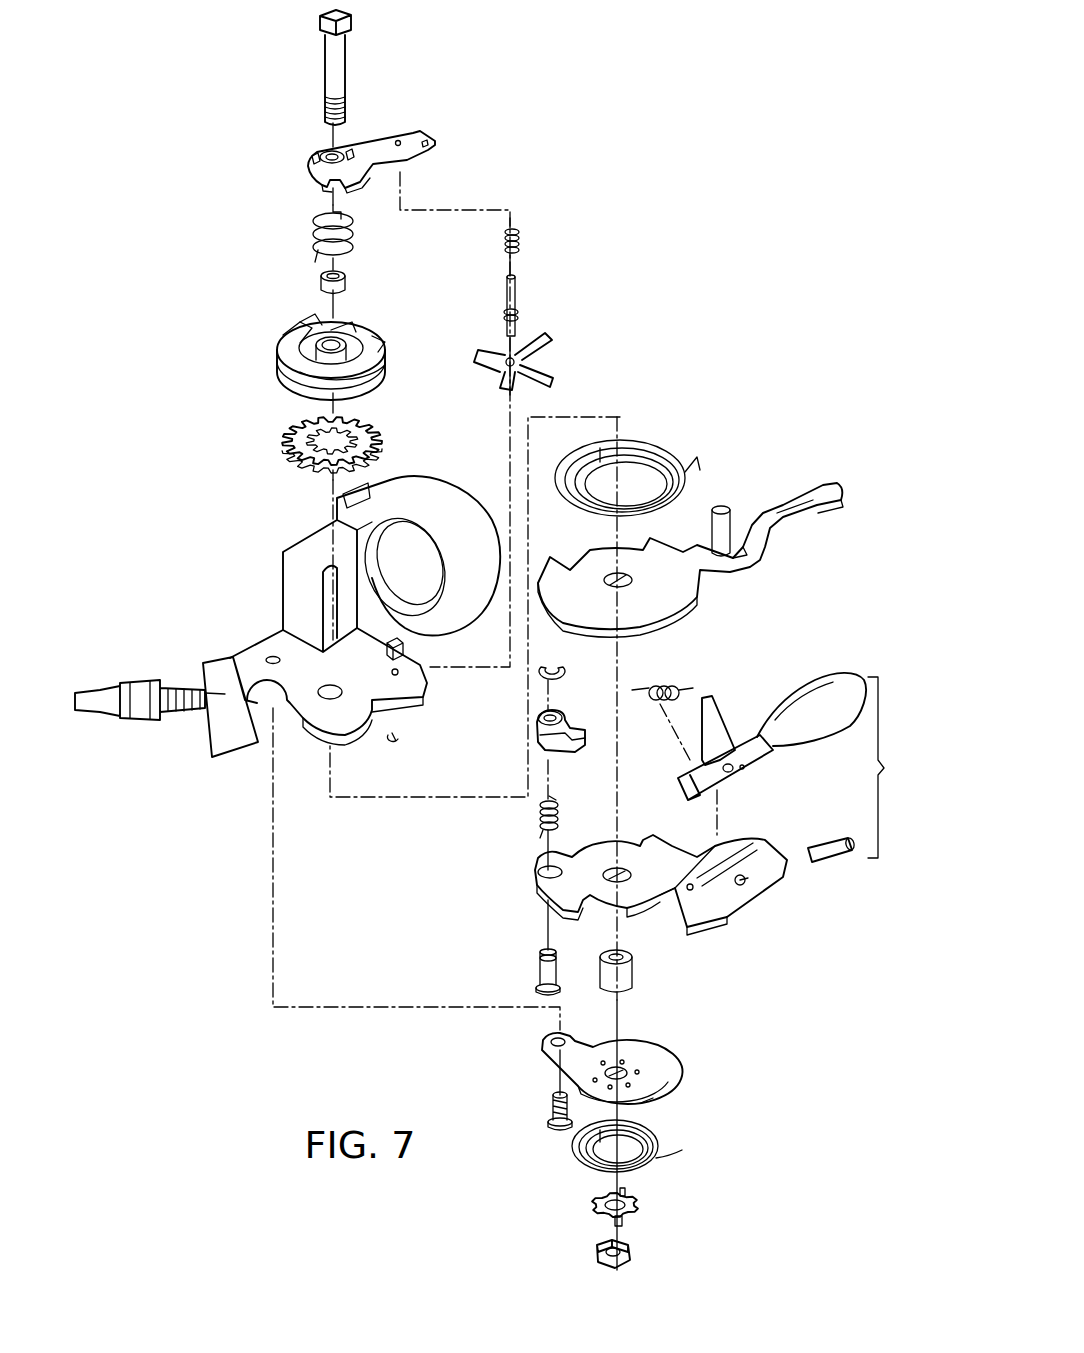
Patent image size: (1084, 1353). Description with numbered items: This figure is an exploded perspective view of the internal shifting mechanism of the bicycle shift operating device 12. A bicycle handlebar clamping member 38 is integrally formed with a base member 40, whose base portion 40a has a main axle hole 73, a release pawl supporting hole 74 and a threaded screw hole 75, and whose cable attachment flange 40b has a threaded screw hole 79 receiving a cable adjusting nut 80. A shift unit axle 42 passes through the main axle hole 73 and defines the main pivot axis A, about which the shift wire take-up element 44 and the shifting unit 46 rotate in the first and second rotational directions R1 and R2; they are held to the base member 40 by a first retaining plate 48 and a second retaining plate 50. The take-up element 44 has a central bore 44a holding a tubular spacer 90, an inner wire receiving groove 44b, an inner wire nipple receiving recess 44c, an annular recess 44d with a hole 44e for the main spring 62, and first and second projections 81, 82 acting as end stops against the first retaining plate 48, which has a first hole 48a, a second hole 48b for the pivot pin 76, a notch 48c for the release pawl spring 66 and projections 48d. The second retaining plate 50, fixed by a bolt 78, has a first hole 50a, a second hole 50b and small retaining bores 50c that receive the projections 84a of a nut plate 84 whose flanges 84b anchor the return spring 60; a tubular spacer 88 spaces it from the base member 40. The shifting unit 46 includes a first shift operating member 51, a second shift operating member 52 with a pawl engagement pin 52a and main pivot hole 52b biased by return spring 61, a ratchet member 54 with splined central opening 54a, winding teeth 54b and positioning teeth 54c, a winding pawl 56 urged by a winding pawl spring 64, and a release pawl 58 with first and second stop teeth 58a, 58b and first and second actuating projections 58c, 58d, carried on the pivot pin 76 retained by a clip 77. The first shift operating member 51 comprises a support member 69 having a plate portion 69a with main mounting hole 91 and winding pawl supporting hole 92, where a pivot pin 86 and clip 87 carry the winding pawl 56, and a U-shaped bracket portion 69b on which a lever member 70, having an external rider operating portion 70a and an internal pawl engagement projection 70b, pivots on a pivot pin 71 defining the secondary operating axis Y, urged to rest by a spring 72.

The bicycle shift operating device 12 is at (590, 72).
The bicycle handlebar clamping member 38 is at (338, 635).
The base member 40 is at (338, 635).
The base portion 40a is at (285, 637).
The cable attachment flange 40b is at (228, 745).
The shift unit axle 42 is at (325, 62).
The shift wire take-up element 44 is at (328, 350).
The central bore 44a is at (360, 338).
The inner wire receiving groove 44b is at (356, 376).
The inner wire nipple receiving recess 44c is at (385, 345).
The annular recess 44d is at (340, 325).
The hole 44e is at (292, 332).
The shifting unit 46 is at (660, 262).
The first retaining plate 48 is at (380, 148).
The first hole 48a is at (323, 155).
The second hole 48b is at (401, 146).
The notch 48c is at (437, 146).
The projections 48d is at (311, 170).
The second retaining plate 50 is at (599, 1060).
The first hole 50a is at (623, 1069).
The second hole 50b is at (551, 1040).
The small retaining bores 50c is at (640, 1074).
The first shift operating member 51 is at (889, 767).
The second shift operating member 52 is at (690, 525).
The pawl engagement pin 52a is at (708, 510).
The main pivot hole 52b is at (615, 576).
The ratchet member 54 is at (338, 443).
The splined central opening 54a is at (360, 446).
The winding teeth 54b is at (356, 462).
The positioning teeth 54c is at (362, 428).
The winding pawl 56 is at (567, 712).
The release pawl 58 is at (535, 377).
The first stop tooth 58a is at (490, 360).
The second stop tooth 58b is at (505, 386).
The first actuating projection 58c is at (555, 385).
The second actuating projection 58d is at (548, 335).
The return spring 60 is at (573, 1165).
The return spring 61 is at (640, 445).
The main spring 62 is at (305, 219).
The winding pawl spring 64 is at (560, 800).
The release pawl spring 66 is at (526, 230).
The support member 69 is at (639, 880).
The plate portion 69a is at (636, 890).
The bracket portion 69b is at (773, 895).
The lever member 70 is at (772, 699).
The external rider operating portion 70a is at (787, 695).
The internal pawl engagement projection 70b is at (716, 720).
The pivot pin 71 is at (822, 840).
The spring 72 is at (649, 685).
The main axle hole 73 is at (333, 699).
The release pawl supporting hole 74 is at (421, 688).
The threaded screw hole 75 is at (269, 657).
The pivot pin 76 is at (519, 298).
The clip 77 is at (401, 737).
The bolt 78 is at (548, 1100).
The threaded screw hole 79 is at (203, 693).
The cable adjusting nut 80 is at (118, 685).
The first projection 81 is at (312, 320).
The second projection 82 is at (325, 372).
The nut plate 84 is at (661, 1205).
The projections 84a is at (626, 1190).
The flanges 84b is at (623, 1222).
The pivot pin 86 is at (536, 961).
The clip 87 is at (555, 663).
The tubular spacer 88 is at (634, 966).
The tubular spacer 90 is at (320, 277).
The main mounting hole 91 is at (622, 870).
The winding pawl supporting hole 92 is at (540, 870).
The first rotational direction R1 is at (315, 131).
The second rotational direction R2 is at (359, 130).
The main pivot axis A is at (330, 490).
The secondary operating axis Y is at (800, 872).